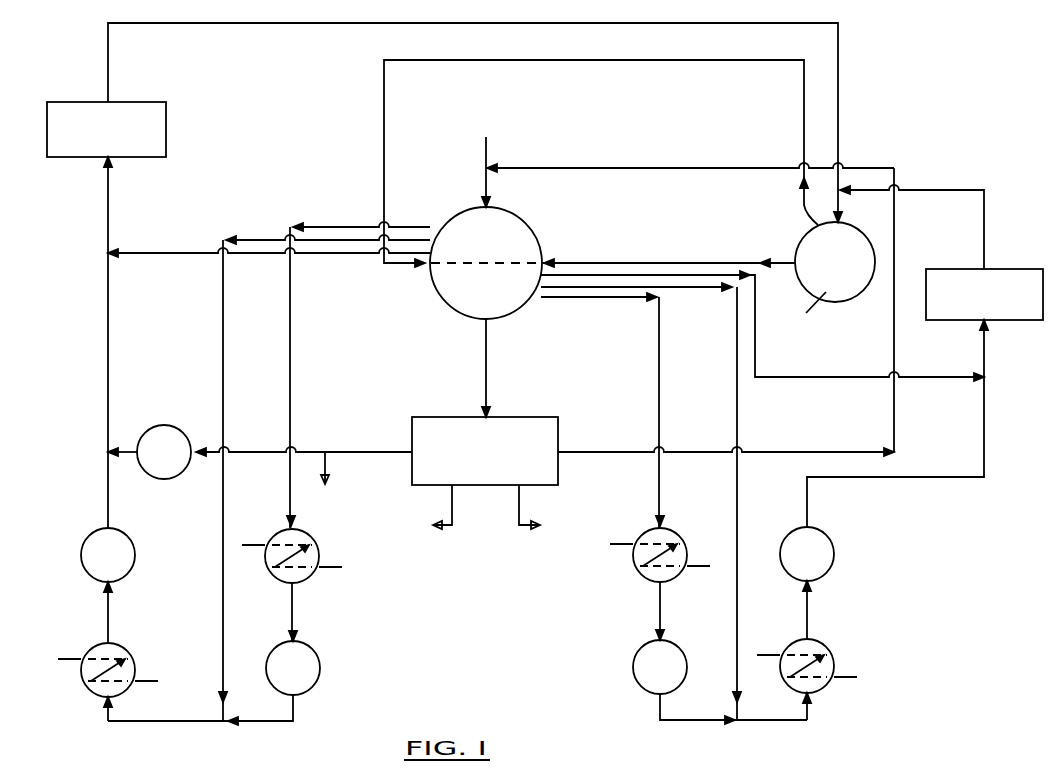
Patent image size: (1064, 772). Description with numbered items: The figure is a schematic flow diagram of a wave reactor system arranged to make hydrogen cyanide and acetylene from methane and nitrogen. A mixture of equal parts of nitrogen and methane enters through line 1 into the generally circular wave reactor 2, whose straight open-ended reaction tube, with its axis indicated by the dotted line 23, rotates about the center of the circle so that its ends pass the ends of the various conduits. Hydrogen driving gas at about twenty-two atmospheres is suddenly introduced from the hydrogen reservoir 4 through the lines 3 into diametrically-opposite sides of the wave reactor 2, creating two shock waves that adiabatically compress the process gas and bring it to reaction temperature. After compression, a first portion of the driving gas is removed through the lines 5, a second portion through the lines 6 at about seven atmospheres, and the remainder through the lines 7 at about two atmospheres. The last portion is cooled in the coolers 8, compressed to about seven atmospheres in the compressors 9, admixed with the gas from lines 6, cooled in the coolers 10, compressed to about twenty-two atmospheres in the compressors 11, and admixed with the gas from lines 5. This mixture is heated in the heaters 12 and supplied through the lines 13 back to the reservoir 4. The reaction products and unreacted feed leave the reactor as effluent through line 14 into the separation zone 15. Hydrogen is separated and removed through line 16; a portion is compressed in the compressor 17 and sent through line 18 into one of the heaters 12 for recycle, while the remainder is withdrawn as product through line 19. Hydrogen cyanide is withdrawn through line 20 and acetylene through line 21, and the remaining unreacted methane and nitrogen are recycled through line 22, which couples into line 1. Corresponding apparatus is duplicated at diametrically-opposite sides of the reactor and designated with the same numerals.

The line 1 is at (482, 157).
The wave reactor 2 is at (505, 210).
The lines 3 is at (384, 129).
The hydrogen reservoir 4 is at (853, 230).
The lines 5 is at (145, 252).
The lines 6 is at (224, 358).
The lines 7 is at (291, 358).
The coolers 8 is at (273, 574).
The compressors 9 is at (319, 658).
The coolers 10 is at (128, 648).
The compressors 11 is at (82, 566).
The heaters 12 is at (46, 119).
The lines 13 is at (292, 24).
The line 14 is at (489, 356).
The separation zone 15 is at (521, 416).
The line 16 is at (360, 451).
The compressor 17 is at (173, 427).
The line 18 is at (132, 451).
The line 19 is at (329, 467).
The line 20 is at (522, 511).
The line 21 is at (453, 519).
The line 22 is at (896, 249).
The dotted line 23 is at (512, 262).